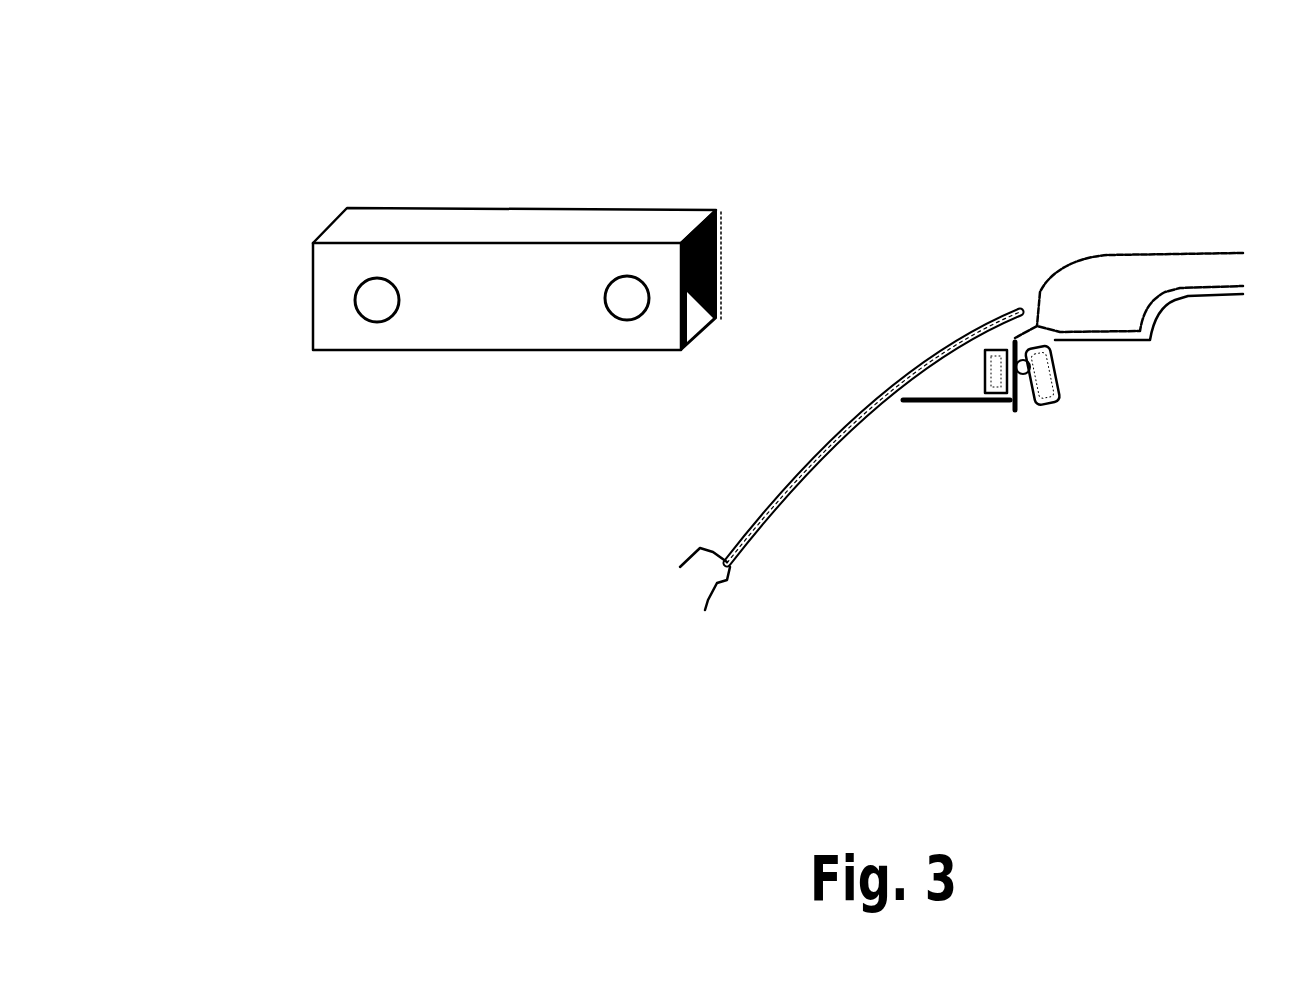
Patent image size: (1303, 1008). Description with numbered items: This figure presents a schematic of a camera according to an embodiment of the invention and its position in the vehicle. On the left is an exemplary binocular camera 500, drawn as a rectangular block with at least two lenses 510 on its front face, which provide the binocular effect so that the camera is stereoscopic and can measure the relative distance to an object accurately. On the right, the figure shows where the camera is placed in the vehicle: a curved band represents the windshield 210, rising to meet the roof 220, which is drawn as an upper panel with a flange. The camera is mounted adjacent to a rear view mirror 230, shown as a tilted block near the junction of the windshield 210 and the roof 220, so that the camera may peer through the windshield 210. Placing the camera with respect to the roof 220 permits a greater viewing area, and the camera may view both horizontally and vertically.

The binocular camera 500 is at (543, 217).
The lenses 510 is at (378, 294).
The windshield 210 is at (820, 460).
The roof 220 is at (1163, 257).
The rear view mirror 230 is at (1048, 377).